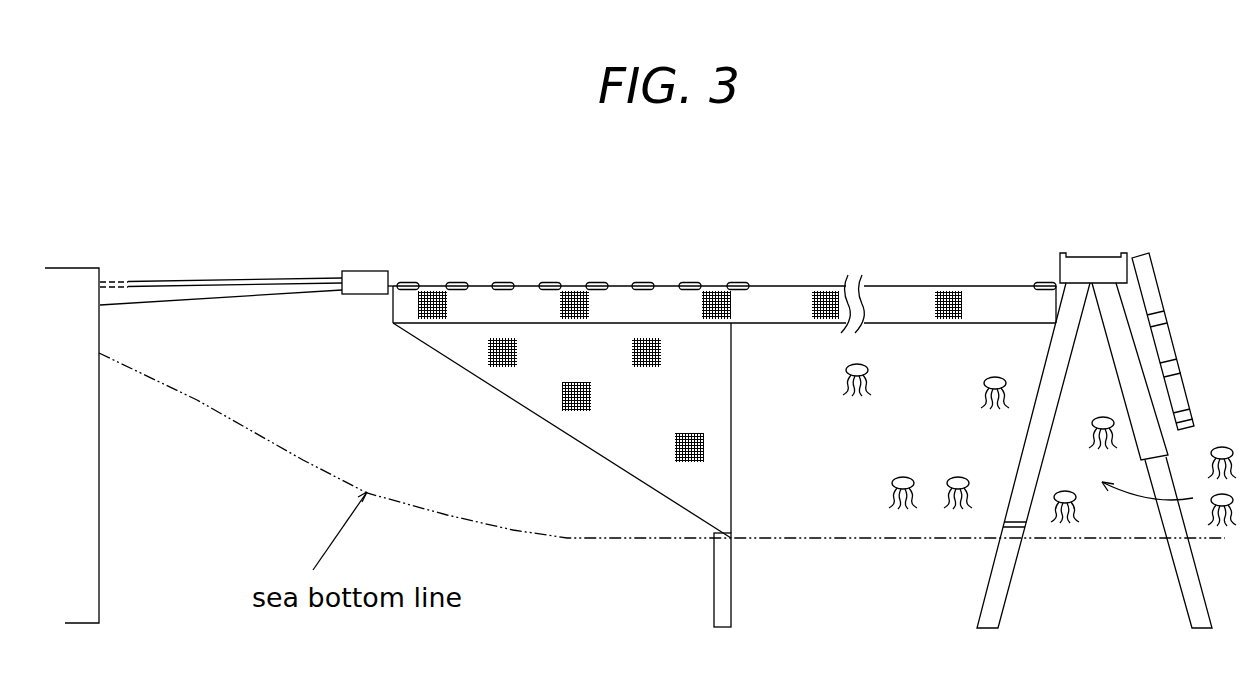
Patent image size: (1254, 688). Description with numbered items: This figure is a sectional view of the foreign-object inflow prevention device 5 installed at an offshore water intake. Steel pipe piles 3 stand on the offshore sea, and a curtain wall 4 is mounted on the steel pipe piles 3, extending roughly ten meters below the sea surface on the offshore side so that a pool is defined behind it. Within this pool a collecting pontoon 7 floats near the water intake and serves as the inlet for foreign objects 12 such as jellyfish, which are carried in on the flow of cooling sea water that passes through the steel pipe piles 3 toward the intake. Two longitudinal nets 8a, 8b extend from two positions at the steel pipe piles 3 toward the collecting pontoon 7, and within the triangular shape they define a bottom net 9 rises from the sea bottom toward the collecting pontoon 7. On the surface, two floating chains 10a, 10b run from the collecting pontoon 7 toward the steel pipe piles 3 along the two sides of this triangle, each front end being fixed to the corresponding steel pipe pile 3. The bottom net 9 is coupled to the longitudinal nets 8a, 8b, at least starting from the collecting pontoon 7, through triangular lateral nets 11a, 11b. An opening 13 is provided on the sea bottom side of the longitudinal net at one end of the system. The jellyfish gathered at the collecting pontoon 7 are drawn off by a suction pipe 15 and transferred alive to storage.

The steel pipe pile 3 is at (722, 583).
The curtain wall 4 is at (1157, 292).
The foreign-object inflow prevention device 5 is at (1055, 244).
The collecting pontoon 7 is at (367, 292).
The longitudinal net 8a is at (724, 288).
The longitudinal net 8b is at (888, 305).
The bottom net 9 is at (547, 422).
The floating chain 10a is at (726, 266).
The floating chain 10b is at (844, 286).
The lateral net 11a is at (776, 428).
The lateral net 11b is at (710, 422).
The foreign object 12 is at (1103, 418).
The opening 13 is at (953, 414).
The suction pipe 15 is at (183, 281).